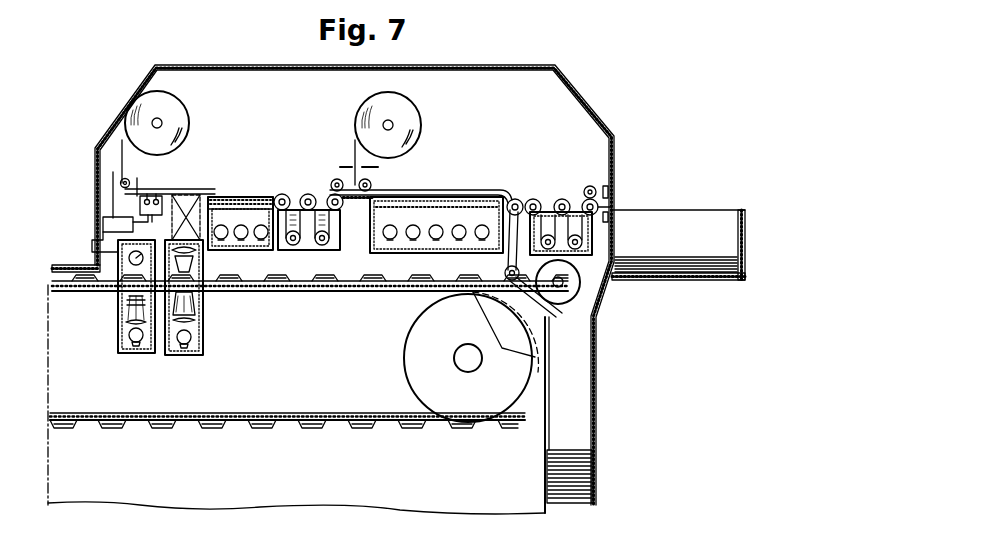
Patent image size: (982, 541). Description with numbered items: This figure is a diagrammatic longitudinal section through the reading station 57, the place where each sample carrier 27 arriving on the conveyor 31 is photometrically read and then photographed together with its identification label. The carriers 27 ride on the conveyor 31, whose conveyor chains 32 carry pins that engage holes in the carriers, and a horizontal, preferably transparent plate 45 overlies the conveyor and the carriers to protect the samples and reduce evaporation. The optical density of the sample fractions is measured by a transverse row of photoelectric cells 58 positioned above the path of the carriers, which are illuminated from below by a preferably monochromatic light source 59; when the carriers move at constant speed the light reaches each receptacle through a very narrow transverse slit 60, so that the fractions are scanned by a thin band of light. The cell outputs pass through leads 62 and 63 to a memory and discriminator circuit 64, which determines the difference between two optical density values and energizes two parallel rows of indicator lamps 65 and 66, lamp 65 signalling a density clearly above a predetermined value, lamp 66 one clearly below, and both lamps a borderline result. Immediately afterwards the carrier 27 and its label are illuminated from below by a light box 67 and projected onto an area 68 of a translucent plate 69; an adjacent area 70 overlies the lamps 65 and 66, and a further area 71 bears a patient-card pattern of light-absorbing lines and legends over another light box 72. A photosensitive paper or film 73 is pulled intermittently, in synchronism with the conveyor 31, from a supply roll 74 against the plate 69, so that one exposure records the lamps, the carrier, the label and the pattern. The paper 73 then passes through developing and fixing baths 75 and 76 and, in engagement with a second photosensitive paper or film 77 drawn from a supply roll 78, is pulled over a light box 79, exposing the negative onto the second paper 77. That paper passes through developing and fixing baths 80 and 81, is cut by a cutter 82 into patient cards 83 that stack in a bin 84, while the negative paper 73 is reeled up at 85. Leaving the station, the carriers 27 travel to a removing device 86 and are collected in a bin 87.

The sample carrier 27 is at (202, 293).
The conveyor 31 is at (278, 459).
The conveyor chains 32 is at (318, 258).
The plate 45 is at (78, 265).
The reading station 57 is at (118, 103).
The photoelectric cells 58 is at (118, 252).
The light source 59 is at (128, 333).
The slit 60 is at (125, 302).
The lead 62 is at (118, 222).
The lead 63 is at (98, 185).
The memory and discriminator circuit 64 is at (98, 209).
The indicator lamp 65 is at (143, 194).
The indicator lamp 66 is at (172, 194).
The light box 67 is at (194, 341).
The area 68 is at (206, 197).
The translucent plate 69 is at (214, 197).
The area 70 is at (162, 193).
The area 71 is at (248, 197).
The light box 72 is at (252, 250).
The photosensitive paper or film 73 is at (280, 193).
The supply roll 74 is at (178, 122).
The developing bath 75 is at (310, 258).
The fixing bath 76 is at (333, 258).
The second photosensitive paper or film 77 is at (414, 196).
The supply roll 78 is at (410, 118).
The light box 79 is at (428, 253).
The developing bath 80 is at (548, 212).
The fixing bath 81 is at (575, 212).
The cutter 82 is at (615, 185).
The patient card 83 is at (657, 260).
The bin 84 is at (738, 210).
The reel 85 is at (572, 295).
The removing device 86 is at (538, 345).
The bin 87 is at (597, 405).